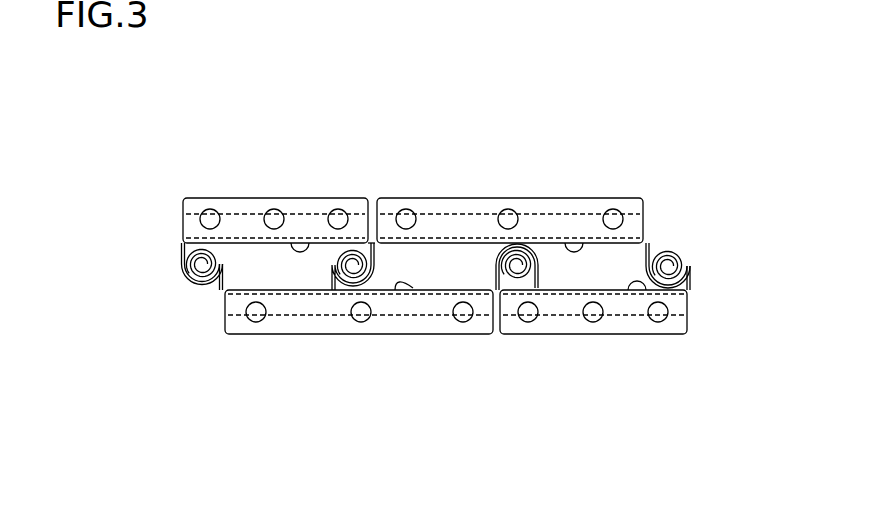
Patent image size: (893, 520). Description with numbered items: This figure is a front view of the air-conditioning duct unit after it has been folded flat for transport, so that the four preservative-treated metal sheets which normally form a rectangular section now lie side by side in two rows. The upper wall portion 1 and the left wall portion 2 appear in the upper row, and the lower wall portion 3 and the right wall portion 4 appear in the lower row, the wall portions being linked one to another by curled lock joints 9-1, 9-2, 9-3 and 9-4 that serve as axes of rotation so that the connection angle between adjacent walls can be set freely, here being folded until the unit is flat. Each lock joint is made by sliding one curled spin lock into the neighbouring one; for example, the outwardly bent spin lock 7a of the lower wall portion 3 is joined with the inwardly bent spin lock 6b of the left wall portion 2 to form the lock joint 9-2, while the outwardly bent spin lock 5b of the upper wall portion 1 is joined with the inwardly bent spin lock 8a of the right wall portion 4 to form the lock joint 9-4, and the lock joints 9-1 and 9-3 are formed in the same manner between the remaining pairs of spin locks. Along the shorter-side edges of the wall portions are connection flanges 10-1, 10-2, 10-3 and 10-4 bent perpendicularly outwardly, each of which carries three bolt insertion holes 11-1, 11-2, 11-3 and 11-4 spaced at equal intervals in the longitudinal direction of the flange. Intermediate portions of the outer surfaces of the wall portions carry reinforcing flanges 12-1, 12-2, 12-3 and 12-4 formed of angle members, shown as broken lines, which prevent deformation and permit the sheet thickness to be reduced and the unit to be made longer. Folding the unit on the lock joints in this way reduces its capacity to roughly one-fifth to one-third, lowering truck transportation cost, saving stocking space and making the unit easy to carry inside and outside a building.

The upper wall portion 1 is at (510, 165).
The left wall portion 2 is at (294, 167).
The lower wall portion 3 is at (359, 354).
The right wall portion 4 is at (577, 369).
The spin lock 5b is at (657, 240).
The spin lock 6b is at (180, 244).
The spin lock 7a is at (218, 287).
The spin lock 8a is at (692, 288).
The lock joint 9-1 is at (312, 291).
The lock joint 9-2 is at (155, 314).
The lock joint 9-3 is at (551, 287).
The lock joint 9-4 is at (714, 220).
The connection flange 10-1 is at (428, 198).
The connection flange 10-2 is at (352, 203).
The connection flange 10-3 is at (438, 328).
The connection flange 10-4 is at (507, 333).
The bolt insertion hole 11-1 is at (511, 210).
The bolt insertion hole 11-2 is at (276, 210).
The bolt insertion hole 11-3 is at (362, 320).
The bolt insertion hole 11-4 is at (593, 322).
The reinforcing flange 12-1 is at (480, 224).
The reinforcing flange 12-2 is at (247, 226).
The reinforcing flange 12-3 is at (323, 300).
The reinforcing flange 12-4 is at (557, 307).